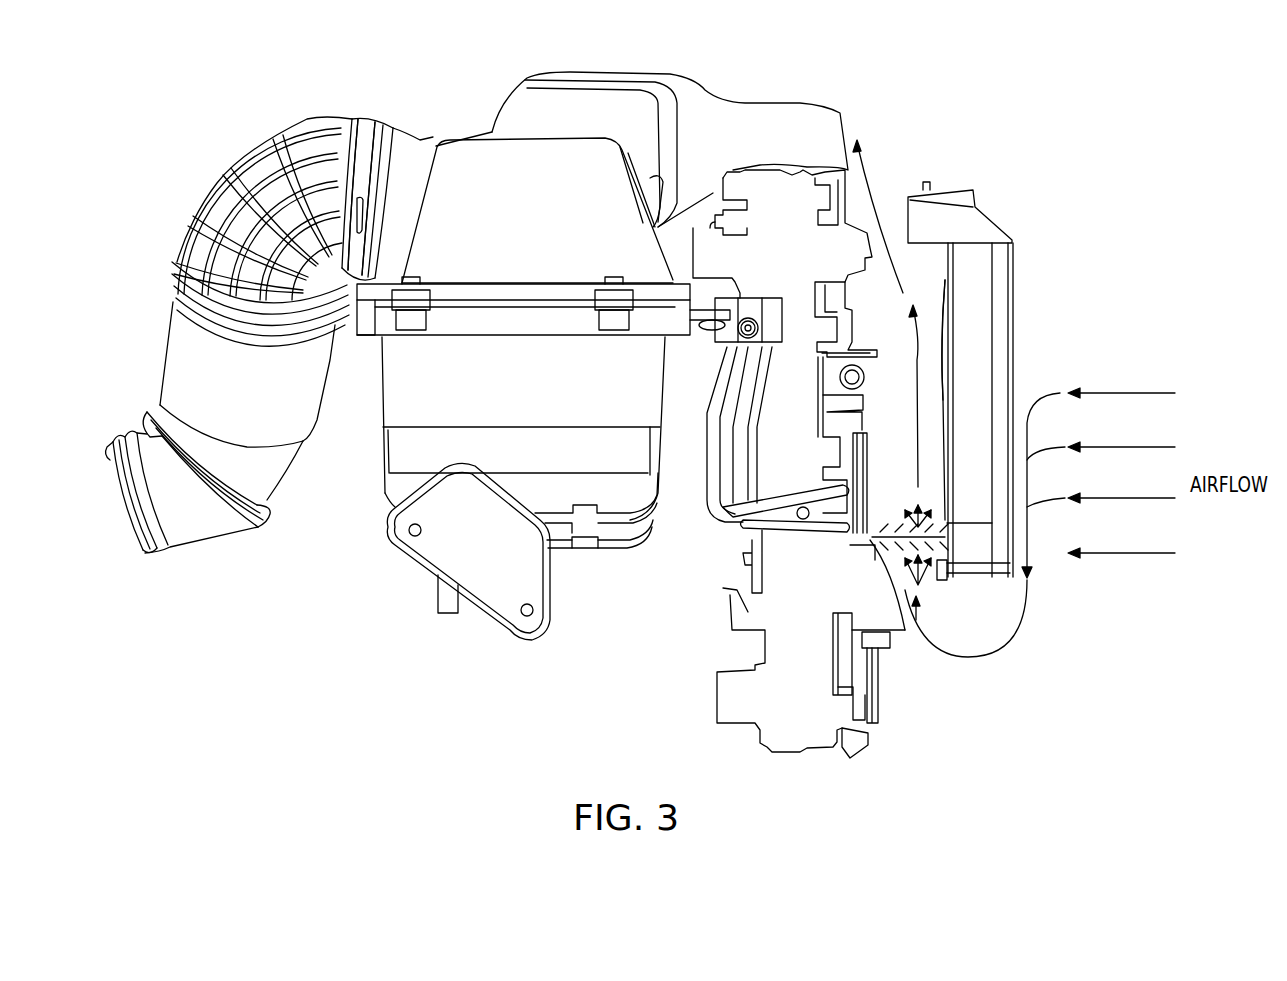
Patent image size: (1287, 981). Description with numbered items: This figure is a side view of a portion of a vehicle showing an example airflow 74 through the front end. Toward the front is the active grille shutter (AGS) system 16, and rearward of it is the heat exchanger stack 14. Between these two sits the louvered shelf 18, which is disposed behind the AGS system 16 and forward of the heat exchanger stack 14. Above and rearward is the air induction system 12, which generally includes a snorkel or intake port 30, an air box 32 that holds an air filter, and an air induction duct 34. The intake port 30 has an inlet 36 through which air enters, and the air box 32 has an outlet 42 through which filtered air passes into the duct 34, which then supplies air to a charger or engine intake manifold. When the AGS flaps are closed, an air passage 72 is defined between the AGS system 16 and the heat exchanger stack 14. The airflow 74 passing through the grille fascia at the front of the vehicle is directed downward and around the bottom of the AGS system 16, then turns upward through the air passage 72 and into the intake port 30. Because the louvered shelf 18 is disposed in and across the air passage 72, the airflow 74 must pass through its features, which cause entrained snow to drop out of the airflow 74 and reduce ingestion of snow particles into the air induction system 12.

The air induction system 12 is at (505, 69).
The heat exchanger stack 14 is at (815, 767).
The active grille shutter (AGS) system 16 is at (985, 186).
The louvered shelf 18 is at (912, 600).
The intake port 30 is at (676, 82).
The air box 32 is at (402, 455).
The air induction duct 34 is at (222, 180).
The inlet 36 is at (842, 113).
The outlet 42 is at (420, 185).
The air passage 72 is at (930, 353).
The airflow 74 is at (977, 657).